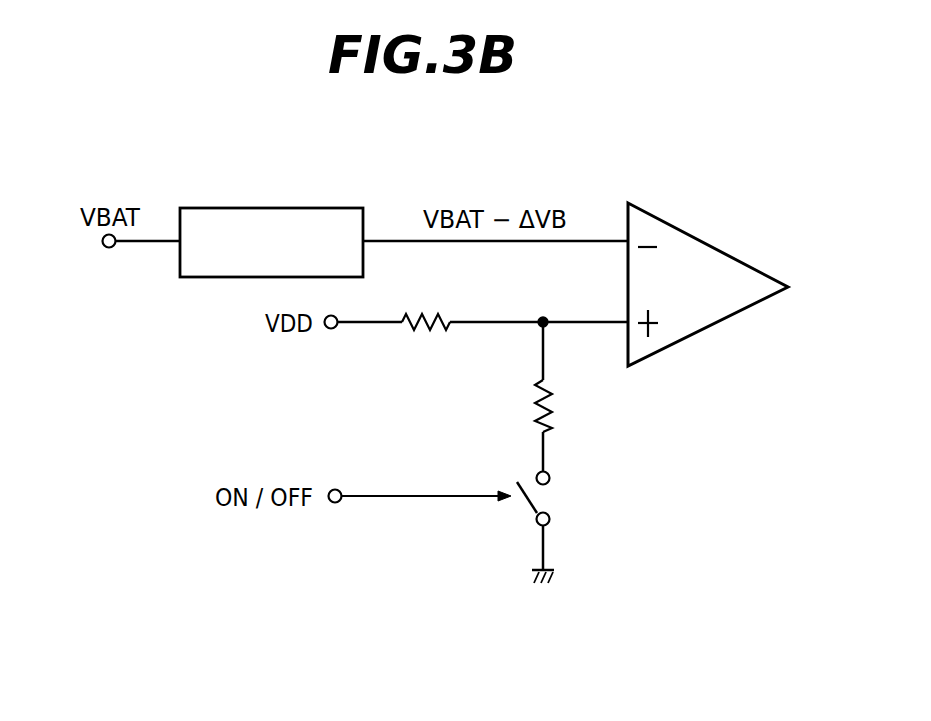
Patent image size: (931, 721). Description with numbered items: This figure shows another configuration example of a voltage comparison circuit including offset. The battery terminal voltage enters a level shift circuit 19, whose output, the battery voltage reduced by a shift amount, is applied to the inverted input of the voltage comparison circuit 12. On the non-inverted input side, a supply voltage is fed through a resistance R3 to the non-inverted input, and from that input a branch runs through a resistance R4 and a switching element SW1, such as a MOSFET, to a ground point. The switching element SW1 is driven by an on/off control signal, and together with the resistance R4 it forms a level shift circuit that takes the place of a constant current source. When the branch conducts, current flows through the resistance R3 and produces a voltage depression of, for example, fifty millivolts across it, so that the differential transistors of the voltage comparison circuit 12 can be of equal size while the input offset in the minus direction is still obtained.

The level shift circuit 19 is at (260, 208).
The voltage comparison circuit 12 is at (703, 240).
The resistance R3 is at (426, 323).
The resistance R4 is at (561, 406).
The switching element SW1 is at (563, 499).